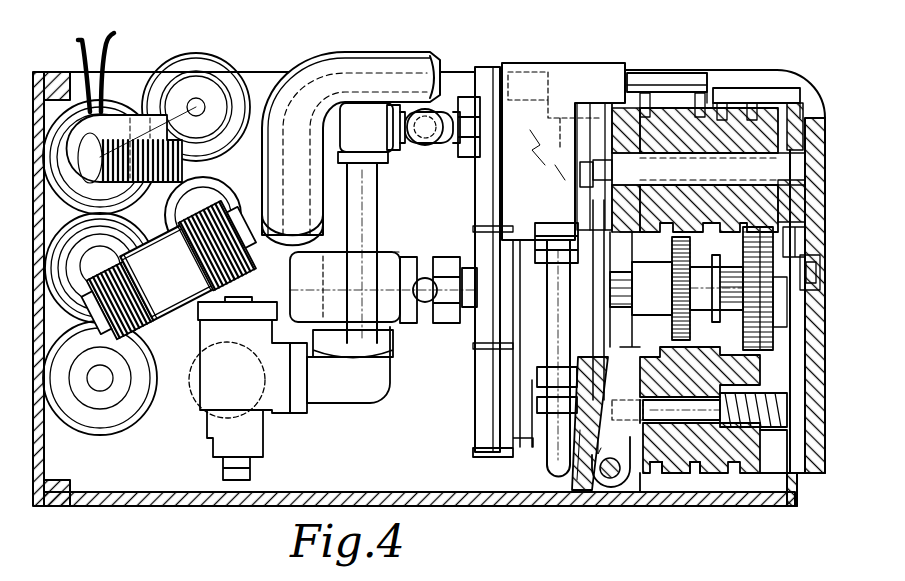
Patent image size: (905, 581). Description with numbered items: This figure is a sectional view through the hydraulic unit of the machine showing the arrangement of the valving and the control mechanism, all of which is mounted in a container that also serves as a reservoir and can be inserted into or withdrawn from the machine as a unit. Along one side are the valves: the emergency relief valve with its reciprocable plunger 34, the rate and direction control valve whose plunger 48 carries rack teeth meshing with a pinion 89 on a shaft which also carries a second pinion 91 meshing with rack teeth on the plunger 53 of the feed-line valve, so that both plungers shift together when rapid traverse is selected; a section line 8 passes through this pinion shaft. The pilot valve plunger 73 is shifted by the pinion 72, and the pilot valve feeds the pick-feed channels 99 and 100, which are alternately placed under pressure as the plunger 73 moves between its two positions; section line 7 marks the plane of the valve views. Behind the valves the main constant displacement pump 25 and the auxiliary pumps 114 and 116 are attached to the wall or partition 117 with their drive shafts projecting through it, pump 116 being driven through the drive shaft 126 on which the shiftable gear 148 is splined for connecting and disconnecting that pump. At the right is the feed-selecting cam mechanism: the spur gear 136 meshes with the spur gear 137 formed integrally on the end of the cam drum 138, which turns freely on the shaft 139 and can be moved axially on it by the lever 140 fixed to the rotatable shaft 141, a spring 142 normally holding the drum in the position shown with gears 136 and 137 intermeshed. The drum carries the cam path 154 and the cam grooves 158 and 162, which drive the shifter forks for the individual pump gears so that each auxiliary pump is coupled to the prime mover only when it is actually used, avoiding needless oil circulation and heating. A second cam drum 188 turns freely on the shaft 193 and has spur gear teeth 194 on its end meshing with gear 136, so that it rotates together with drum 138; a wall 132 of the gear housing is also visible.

The section line 7- 7 is at (196, 110).
The section line 8- 8 is at (40, 298).
The main constant displacement pump 25 is at (478, 200).
The reciprocable plunger 34 is at (105, 385).
The plunger 48 is at (95, 262).
The plunger 53 is at (223, 180).
The pinion 72 is at (221, 151).
The plunger 73 is at (76, 193).
The pinion 89 is at (127, 311).
The second pinion 91 is at (203, 277).
The channel 99 is at (110, 42).
The channel 100 is at (80, 45).
The auxiliary pump 114 is at (478, 423).
The auxiliary pump 116 is at (480, 243).
The wall or partition 117 is at (615, 102).
The drive shaft 126 is at (732, 297).
The gear housing wall 132 is at (763, 240).
The spur gear 136 is at (759, 350).
The spur gear 137 is at (764, 510).
The cam drum 138 is at (652, 474).
The shaft 139 is at (642, 500).
The lever 140 is at (580, 497).
The rotatable shaft 141 is at (592, 482).
The spring 142 is at (757, 424).
The shiftable gear 148 is at (673, 328).
The cam path 154 is at (687, 478).
The cam groove 158 is at (703, 474).
The cam groove 162 is at (665, 480).
The cam drum 188 is at (765, 125).
The shaft 193 is at (763, 168).
The spur gear teeth 194 is at (763, 222).